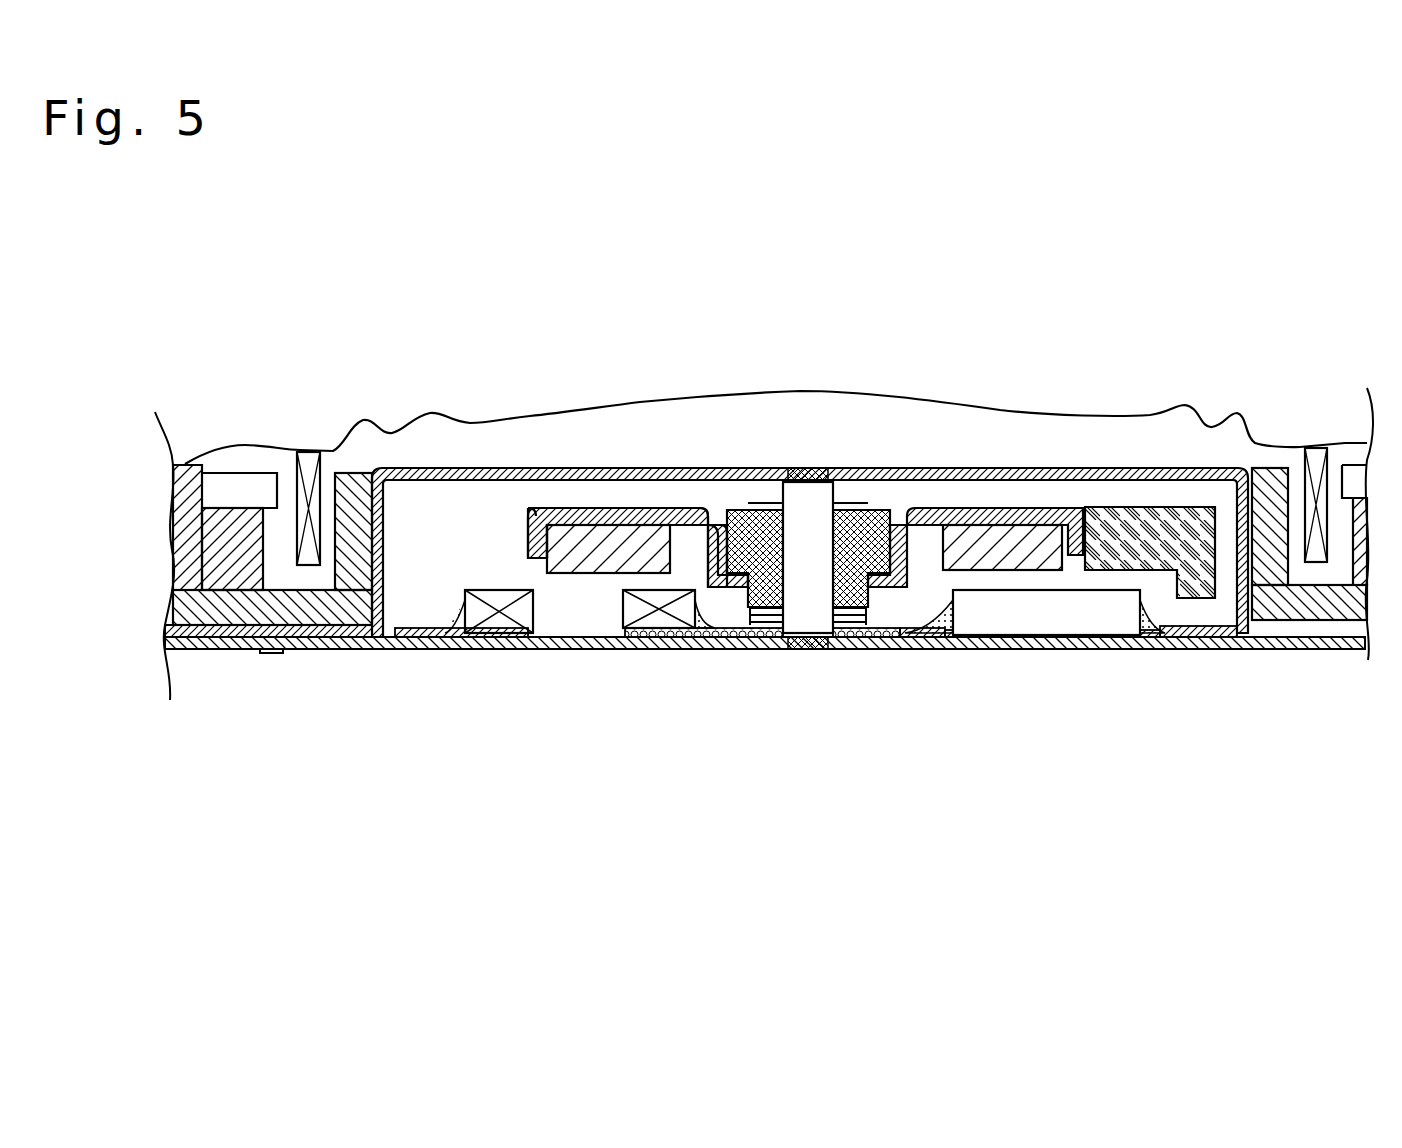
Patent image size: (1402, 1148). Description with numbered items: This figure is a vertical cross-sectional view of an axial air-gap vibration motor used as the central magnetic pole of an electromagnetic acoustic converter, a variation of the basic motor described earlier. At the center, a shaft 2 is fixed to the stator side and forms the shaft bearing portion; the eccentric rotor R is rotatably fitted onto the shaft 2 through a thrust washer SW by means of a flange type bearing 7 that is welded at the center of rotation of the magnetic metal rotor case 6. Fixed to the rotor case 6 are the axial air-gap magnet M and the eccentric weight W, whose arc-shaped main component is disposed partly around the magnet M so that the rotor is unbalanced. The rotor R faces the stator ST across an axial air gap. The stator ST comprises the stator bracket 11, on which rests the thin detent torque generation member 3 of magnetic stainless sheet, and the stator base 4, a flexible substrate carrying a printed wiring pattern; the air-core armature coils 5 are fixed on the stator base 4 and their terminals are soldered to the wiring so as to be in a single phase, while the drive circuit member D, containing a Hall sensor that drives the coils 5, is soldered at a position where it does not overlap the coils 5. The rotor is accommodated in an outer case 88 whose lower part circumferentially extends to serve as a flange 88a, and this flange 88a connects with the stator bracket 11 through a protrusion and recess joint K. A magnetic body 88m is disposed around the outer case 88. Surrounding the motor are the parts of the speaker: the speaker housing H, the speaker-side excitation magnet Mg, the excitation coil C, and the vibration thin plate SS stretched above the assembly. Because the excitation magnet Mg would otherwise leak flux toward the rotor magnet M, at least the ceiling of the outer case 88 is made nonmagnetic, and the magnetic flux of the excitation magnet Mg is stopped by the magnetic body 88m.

The shaft 2 is at (800, 600).
The detent torque generation member 3 is at (702, 637).
The stator base 4 is at (447, 627).
The air-core armature coil 5 is at (655, 615).
The rotor case 6 is at (640, 508).
The flange type bearing 7 is at (730, 510).
The stator bracket 11 is at (588, 640).
The outer case 88 is at (510, 468).
The flange 88a is at (342, 650).
The magnetic body 88m is at (362, 472).
The excitation coil C is at (311, 452).
The drive circuit member D is at (1090, 615).
The speaker housing H is at (178, 540).
The protrusion and recess joint K is at (270, 652).
The axial air-gap magnet M is at (1002, 550).
The speaker-side excitation magnet Mg is at (232, 555).
The eccentric rotor R is at (1178, 503).
The vibration thin plate SS is at (885, 392).
The stator ST is at (913, 662).
The thrust washer SW is at (768, 628).
The eccentric weight W is at (1122, 522).